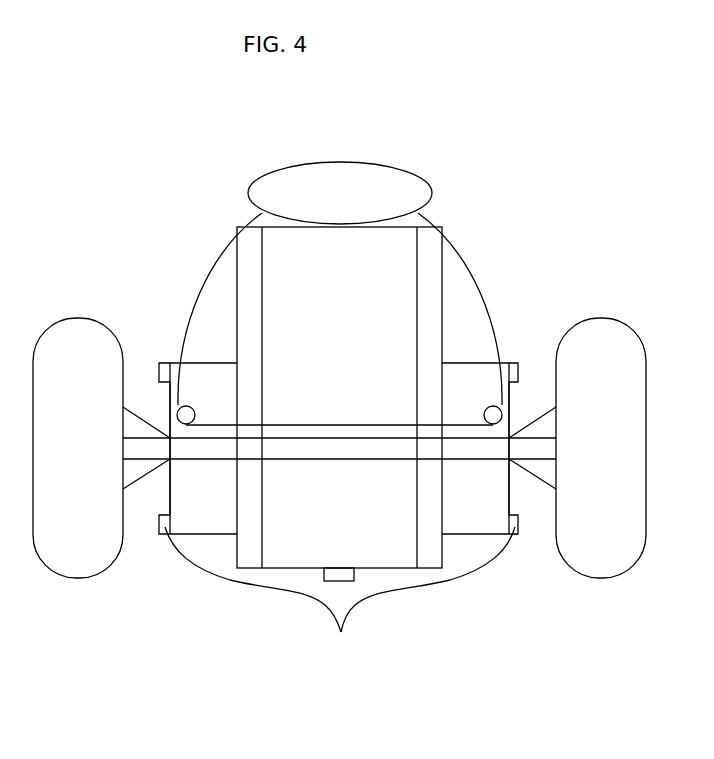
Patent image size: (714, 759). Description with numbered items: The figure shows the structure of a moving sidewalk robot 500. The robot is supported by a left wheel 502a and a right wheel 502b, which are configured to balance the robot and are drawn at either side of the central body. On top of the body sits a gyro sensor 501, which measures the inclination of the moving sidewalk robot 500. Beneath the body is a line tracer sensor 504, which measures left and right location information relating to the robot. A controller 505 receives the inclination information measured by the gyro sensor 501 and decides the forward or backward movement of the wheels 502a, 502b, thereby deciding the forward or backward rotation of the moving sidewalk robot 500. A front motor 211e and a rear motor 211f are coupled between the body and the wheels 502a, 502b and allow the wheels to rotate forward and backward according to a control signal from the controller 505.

The moving sidewalk robot 500 is at (443, 282).
The gyro sensor 501 is at (340, 185).
The line tracer sensor 504 is at (342, 575).
The controller 505 is at (203, 284).
The front motor 211e is at (142, 427).
The rear motor 211f is at (542, 428).
The left wheel 502a is at (78, 555).
The right wheel 502b is at (601, 555).